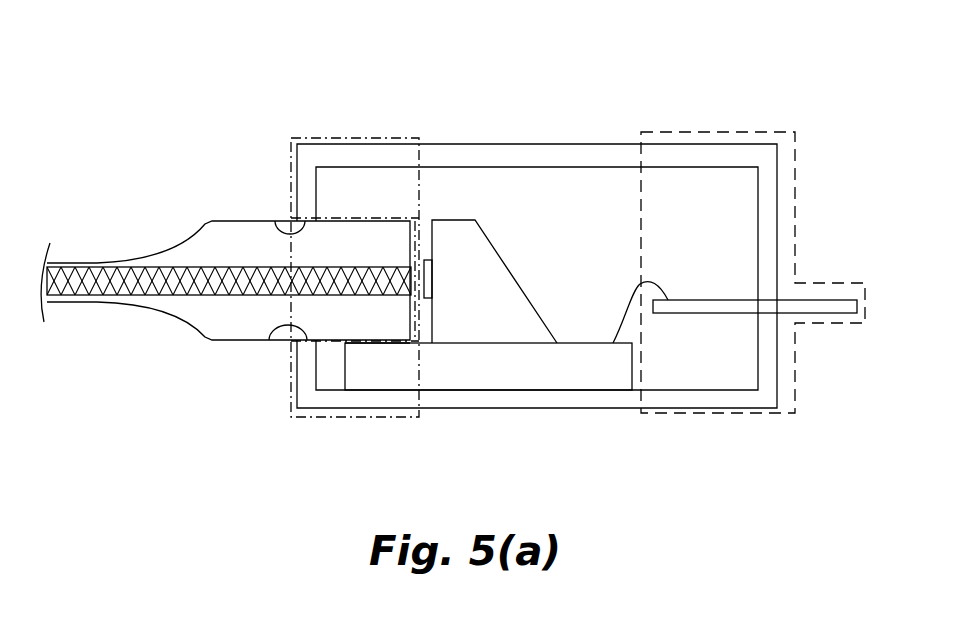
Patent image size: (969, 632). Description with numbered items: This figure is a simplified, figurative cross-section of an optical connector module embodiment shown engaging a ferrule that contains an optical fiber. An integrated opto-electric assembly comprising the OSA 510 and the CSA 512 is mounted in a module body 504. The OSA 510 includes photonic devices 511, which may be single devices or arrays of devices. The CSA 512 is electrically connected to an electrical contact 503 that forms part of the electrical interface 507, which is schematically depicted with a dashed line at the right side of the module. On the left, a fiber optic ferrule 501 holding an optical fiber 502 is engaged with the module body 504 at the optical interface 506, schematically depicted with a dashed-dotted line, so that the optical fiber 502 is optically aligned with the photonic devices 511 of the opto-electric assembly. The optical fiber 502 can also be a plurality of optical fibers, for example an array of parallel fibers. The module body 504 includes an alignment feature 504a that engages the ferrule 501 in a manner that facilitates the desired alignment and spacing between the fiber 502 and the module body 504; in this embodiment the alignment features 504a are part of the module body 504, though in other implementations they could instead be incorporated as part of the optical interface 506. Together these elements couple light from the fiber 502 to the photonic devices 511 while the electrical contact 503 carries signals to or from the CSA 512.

The fiber optic ferrule 501 is at (227, 327).
The optical fiber 502 is at (158, 296).
The electrical contact 503 is at (827, 313).
The module body 504 is at (777, 190).
The alignment feature 504a is at (275, 221).
The optical interface 506 is at (310, 140).
The electrical interface 507 is at (846, 286).
The OSA 510 is at (500, 257).
The photonic devices 511 is at (427, 300).
The CSA 512 is at (498, 378).